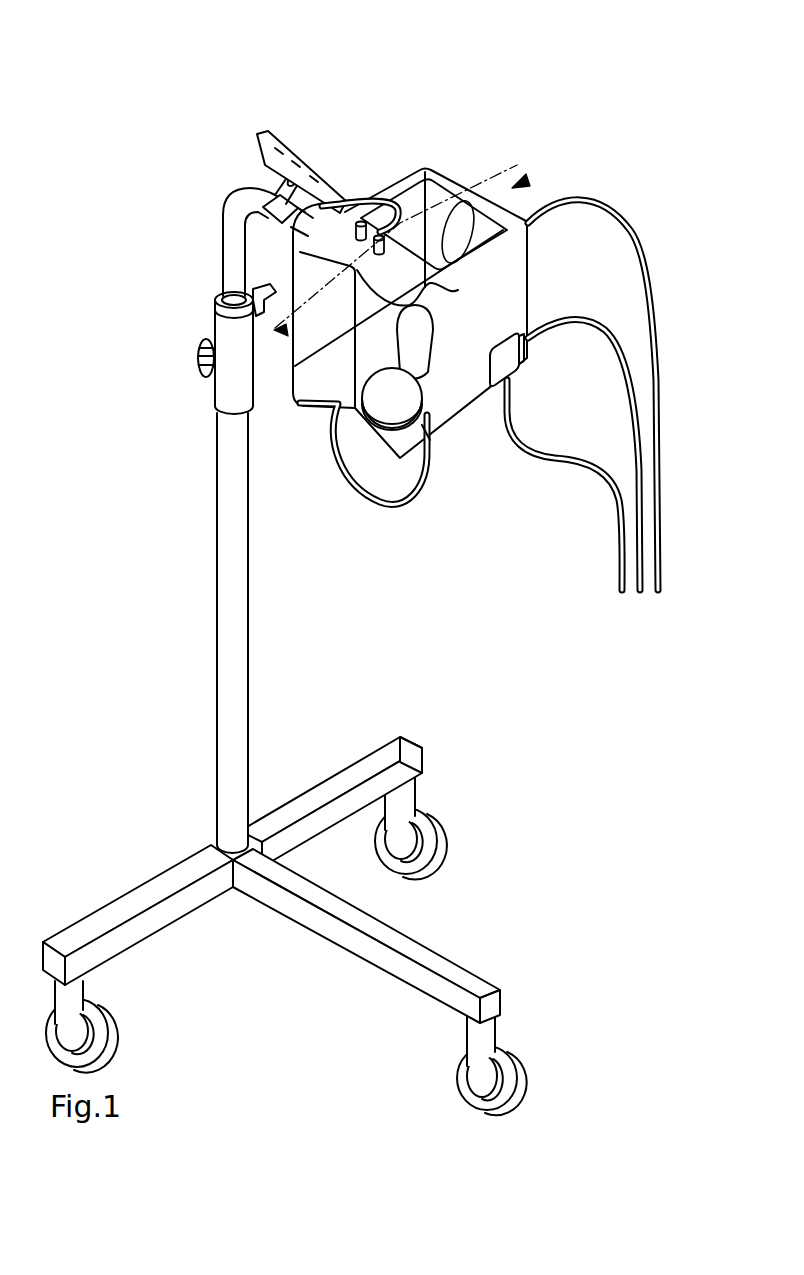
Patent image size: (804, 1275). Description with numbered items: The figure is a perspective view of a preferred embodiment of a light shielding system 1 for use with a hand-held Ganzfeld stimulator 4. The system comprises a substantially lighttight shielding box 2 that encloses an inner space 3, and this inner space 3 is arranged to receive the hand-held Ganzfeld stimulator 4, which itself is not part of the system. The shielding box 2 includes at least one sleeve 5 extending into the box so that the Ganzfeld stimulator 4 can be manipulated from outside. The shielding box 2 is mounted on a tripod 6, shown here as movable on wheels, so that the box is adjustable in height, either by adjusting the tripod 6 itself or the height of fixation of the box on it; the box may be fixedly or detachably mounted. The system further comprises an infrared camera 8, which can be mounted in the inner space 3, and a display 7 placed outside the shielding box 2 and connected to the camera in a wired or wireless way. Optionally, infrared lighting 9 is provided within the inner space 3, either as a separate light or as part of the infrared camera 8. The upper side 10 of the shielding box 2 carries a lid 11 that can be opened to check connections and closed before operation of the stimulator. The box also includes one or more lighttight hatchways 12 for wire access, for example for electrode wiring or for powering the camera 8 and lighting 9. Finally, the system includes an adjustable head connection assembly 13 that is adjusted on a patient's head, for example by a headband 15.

The light shielding system 1 is at (193, 136).
The shielding box 2 is at (507, 308).
The inner space 3 is at (527, 317).
The hand-held Ganzfeld stimulator 4 is at (425, 442).
The sleeve 5 is at (447, 377).
The tripod 6 is at (214, 532).
The display 7 is at (312, 162).
The infrared camera 8 is at (393, 300).
The infrared lighting 9 is at (364, 200).
The upper side 10 is at (438, 320).
The lid 11 is at (455, 320).
The lighttight hatchway 12 is at (528, 328).
The adjustable head connection assembly 13 is at (358, 527).
The headband 15 is at (390, 503).